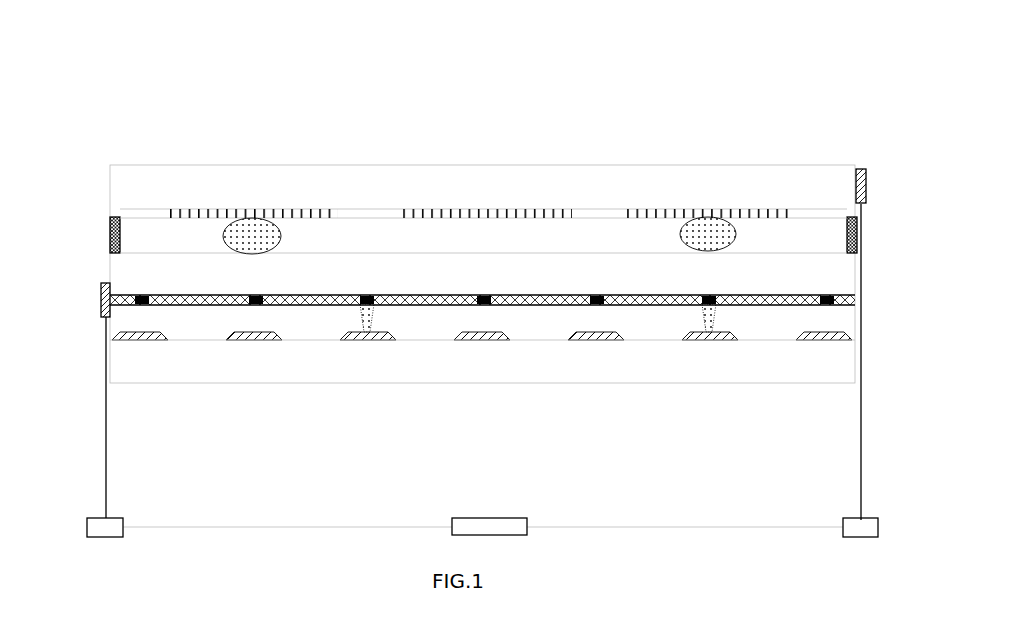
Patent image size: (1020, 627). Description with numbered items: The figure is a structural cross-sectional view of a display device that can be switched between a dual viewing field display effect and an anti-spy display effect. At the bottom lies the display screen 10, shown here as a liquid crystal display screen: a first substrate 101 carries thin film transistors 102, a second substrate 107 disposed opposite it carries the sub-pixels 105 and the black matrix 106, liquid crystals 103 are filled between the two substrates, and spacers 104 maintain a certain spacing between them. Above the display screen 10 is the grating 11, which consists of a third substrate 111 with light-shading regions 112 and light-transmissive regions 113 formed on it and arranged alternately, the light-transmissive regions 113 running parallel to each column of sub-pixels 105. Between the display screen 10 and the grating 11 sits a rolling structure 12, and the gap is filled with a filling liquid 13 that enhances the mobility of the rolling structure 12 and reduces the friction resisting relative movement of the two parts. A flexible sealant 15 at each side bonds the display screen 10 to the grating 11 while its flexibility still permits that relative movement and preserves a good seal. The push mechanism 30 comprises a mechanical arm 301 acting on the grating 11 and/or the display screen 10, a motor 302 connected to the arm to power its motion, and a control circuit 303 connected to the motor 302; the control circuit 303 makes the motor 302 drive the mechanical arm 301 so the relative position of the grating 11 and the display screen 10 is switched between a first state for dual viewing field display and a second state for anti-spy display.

The display screen 10 is at (482, 374).
The first substrate 101 is at (535, 441).
The thin film transistors 102 is at (255, 340).
The liquid crystals 103 is at (312, 328).
The spacers 104 is at (369, 317).
The sub-pixels 105 is at (423, 300).
The black matrix 106 is at (488, 303).
The second substrate 107 is at (535, 277).
The grating 11 is at (483, 330).
The third substrate 111 is at (578, 190).
The light-shading regions 112 is at (665, 213).
The light-transmissive regions 113 is at (615, 212).
The rolling structure 12 is at (720, 242).
The filling liquid 13 is at (780, 233).
The flexible sealant 15 is at (117, 217).
The push mechanism 30 is at (93, 338).
The mechanical arm 301 is at (103, 292).
The motor 302 is at (482, 527).
The control circuit 303 is at (489, 526).